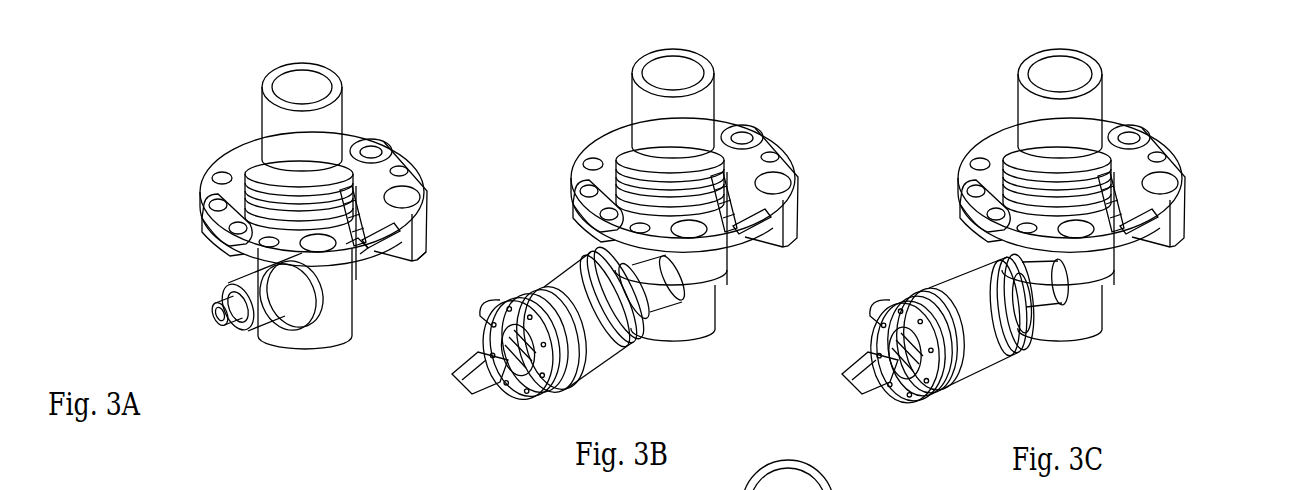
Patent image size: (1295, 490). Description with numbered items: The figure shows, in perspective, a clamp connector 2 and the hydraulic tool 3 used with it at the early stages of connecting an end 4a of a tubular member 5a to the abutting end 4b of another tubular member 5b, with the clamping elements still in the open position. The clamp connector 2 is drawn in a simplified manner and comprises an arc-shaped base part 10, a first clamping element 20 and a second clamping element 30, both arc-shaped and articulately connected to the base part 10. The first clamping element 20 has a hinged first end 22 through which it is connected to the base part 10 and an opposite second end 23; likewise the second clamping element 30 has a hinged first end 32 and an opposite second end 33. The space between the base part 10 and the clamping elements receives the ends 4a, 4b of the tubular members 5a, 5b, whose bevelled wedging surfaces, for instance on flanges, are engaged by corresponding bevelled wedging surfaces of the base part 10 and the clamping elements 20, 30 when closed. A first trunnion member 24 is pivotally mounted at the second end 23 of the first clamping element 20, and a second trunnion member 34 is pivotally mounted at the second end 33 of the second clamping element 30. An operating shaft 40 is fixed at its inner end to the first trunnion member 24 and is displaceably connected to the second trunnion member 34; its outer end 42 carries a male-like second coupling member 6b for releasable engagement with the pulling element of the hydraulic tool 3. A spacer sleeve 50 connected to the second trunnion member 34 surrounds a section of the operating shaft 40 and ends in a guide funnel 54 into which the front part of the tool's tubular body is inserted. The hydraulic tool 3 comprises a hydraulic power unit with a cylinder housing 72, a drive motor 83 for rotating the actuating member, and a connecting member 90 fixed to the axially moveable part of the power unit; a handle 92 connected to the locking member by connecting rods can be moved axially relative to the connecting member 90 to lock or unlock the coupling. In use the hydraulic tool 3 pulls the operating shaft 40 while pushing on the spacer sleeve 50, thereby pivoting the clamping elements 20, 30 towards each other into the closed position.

In FIG. 3A, the clamp connector 2 is at (378, 107).
In FIG. 3B, the clamp connector 2 is at (781, 112).
In FIG. 3C, the clamp connector 2 is at (1170, 112).
In FIG. 3B, the hydraulic tool 3 is at (593, 381).
In FIG. 3C, the hydraulic tool 3 is at (973, 392).
In FIG. 3A, the end of tubular member 4a is at (336, 188).
In FIG. 3A, the abutting end of tubular member 4b is at (378, 261).
In FIG. 3A, the tubular member 5a is at (276, 117).
In FIG. 3B, the tubular member 5a is at (698, 103).
In FIG. 3C, the tubular member 5a is at (1085, 103).
In FIG. 3A, the tubular member 5b is at (320, 305).
In FIG. 3B, the tubular member 5b is at (698, 323).
In FIG. 3C, the tubular member 5b is at (1085, 323).
In FIG. 3A, the second coupling member 6b is at (222, 303).
In FIG. 3A, the base part 10 is at (300, 193).
In FIG. 3B, the base part 10 is at (673, 180).
In FIG. 3C, the base part 10 is at (1061, 180).
In FIG. 3A, the first clamping element 20 is at (406, 200).
In FIG. 3B, the first clamping element 20 is at (780, 186).
In FIG. 3C, the first clamping element 20 is at (1169, 186).
In FIG. 3A, the hinged first end 22 is at (402, 137).
In FIG. 3A, the second end 23 is at (441, 262).
In FIG. 3A, the first trunnion member 24 is at (434, 192).
In FIG. 3A, the second clamping element 30 is at (300, 211).
In FIG. 3B, the second clamping element 30 is at (694, 236).
In FIG. 3C, the second clamping element 30 is at (1081, 236).
In FIG. 3A, the hinged first end 32 is at (208, 236).
In FIG. 3A, the second end 33 is at (376, 292).
In FIG. 3A, the second trunnion member 34 is at (318, 279).
In FIG. 3A, the operating shaft 40 is at (415, 232).
In FIG. 3B, the operating shaft 40 is at (761, 245).
In FIG. 3C, the operating shaft 40 is at (1150, 245).
In FIG. 3A, the outer end 42 is at (213, 320).
In FIG. 3A, the spacer sleeve 50 is at (297, 303).
In FIG. 3A, the guide funnel 54 is at (268, 340).
In FIG. 3B, the guide funnel 54 is at (642, 297).
In FIG. 3B, the cylinder housing 72 is at (541, 283).
In FIG. 3C, the cylinder housing 72 is at (923, 293).
In FIG. 3B, the drive motor 83 is at (493, 302).
In FIG. 3B, the connecting member 90 is at (545, 390).
In FIG. 3C, the connecting member 90 is at (932, 387).
In FIG. 3B, the handle 92 is at (493, 393).
In FIG. 3C, the handle 92 is at (883, 393).